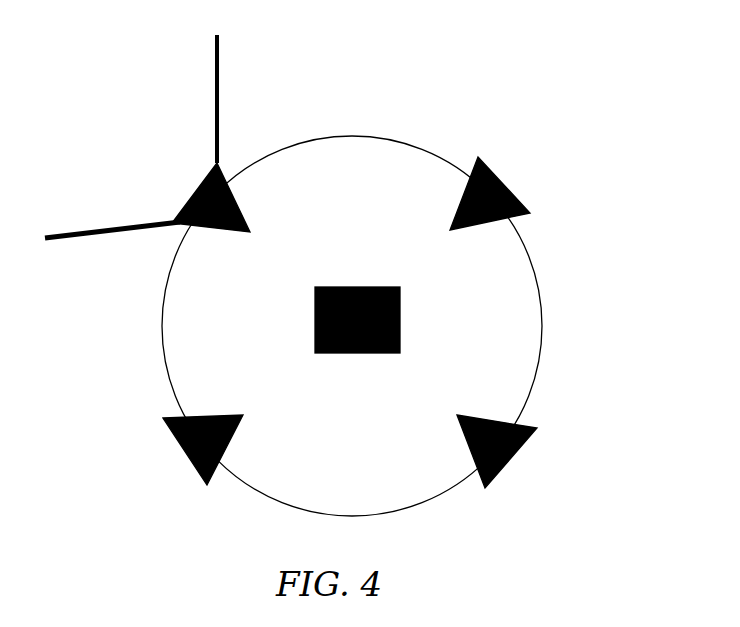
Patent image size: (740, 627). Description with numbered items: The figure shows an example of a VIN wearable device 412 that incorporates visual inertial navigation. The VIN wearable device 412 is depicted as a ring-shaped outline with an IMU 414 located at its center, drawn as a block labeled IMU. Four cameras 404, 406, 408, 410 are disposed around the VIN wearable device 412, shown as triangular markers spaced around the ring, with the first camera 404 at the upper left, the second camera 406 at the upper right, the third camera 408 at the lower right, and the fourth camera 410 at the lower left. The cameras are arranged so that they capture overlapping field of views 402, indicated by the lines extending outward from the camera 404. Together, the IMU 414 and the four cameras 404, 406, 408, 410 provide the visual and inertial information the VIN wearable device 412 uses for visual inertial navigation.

The overlapping field of views 402 is at (220, 75).
The camera 404 is at (227, 177).
The camera 406 is at (510, 183).
The camera 408 is at (513, 462).
The camera 410 is at (188, 453).
The VIN wearable device 412 is at (507, 343).
The IMU 414 is at (400, 312).